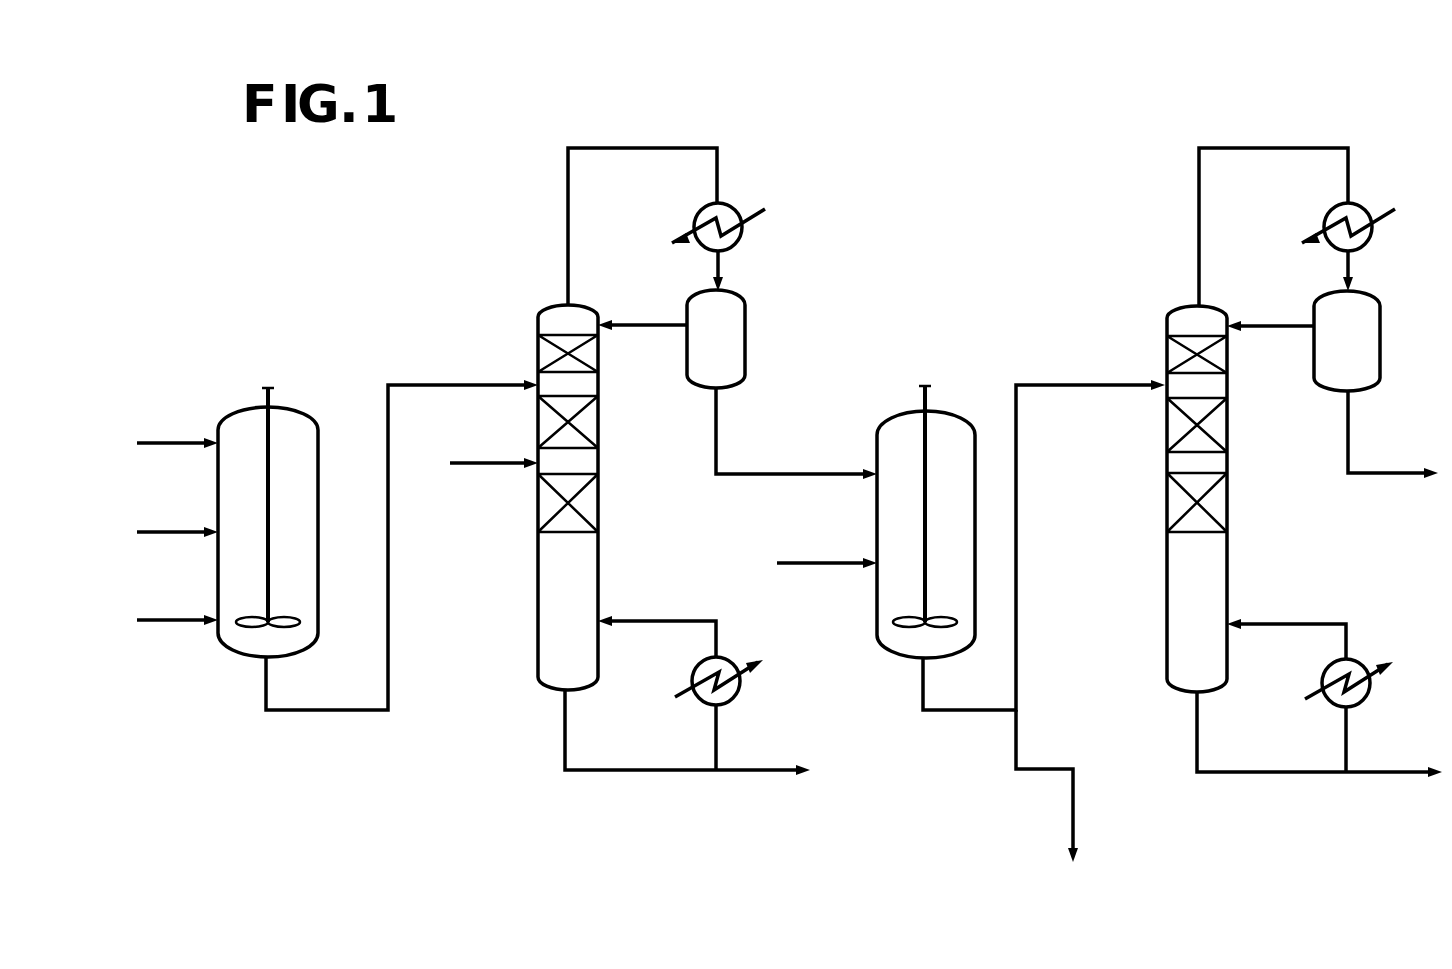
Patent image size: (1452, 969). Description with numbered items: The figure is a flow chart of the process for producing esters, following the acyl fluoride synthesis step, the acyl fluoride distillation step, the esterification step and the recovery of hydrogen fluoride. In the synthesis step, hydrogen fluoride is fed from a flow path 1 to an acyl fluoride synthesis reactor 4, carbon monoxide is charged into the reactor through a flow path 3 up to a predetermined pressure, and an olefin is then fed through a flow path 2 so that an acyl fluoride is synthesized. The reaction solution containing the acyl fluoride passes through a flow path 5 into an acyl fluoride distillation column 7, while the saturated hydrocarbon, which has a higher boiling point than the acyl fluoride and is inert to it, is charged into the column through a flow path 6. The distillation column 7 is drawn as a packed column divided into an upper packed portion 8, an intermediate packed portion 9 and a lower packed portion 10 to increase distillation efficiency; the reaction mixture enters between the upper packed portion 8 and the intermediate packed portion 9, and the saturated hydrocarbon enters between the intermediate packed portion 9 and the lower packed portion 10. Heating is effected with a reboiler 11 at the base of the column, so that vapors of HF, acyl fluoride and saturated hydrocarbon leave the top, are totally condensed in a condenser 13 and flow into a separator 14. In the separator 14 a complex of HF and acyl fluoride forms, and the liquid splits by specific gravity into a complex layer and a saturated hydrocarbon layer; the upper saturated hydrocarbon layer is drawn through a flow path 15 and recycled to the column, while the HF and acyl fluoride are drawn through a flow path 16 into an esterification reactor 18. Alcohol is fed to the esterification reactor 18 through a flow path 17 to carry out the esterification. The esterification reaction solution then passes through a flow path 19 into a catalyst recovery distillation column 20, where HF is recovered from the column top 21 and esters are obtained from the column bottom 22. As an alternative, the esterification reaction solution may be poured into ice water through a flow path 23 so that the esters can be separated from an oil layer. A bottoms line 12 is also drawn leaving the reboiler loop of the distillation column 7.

The flow path 1 is at (165, 443).
The flow path 2 is at (164, 532).
The flow path 3 is at (164, 620).
The acyl fluoride synthesis reactor 4 is at (300, 410).
The flow path 5 is at (342, 710).
The flow path 6 is at (480, 463).
The acyl fluoride distillation column 7 is at (542, 308).
The upper packed portion 8 is at (600, 357).
The intermediate packed portion 9 is at (600, 424).
The lower packed portion 10 is at (600, 501).
The reboiler 11 is at (742, 699).
The bottoms line 12 is at (766, 775).
The condenser 13 is at (744, 228).
The separator 14 is at (748, 314).
The flow path 15 is at (652, 325).
The flow path 16 is at (712, 460).
The flow path 17 is at (809, 563).
The esterification reactor 18 is at (886, 418).
The flow path 19 is at (1067, 383).
The catalyst recovery distillation column 20 is at (1165, 500).
The column top 21 is at (1350, 452).
The column bottom 22 is at (1395, 770).
The flow path 23 is at (1058, 768).